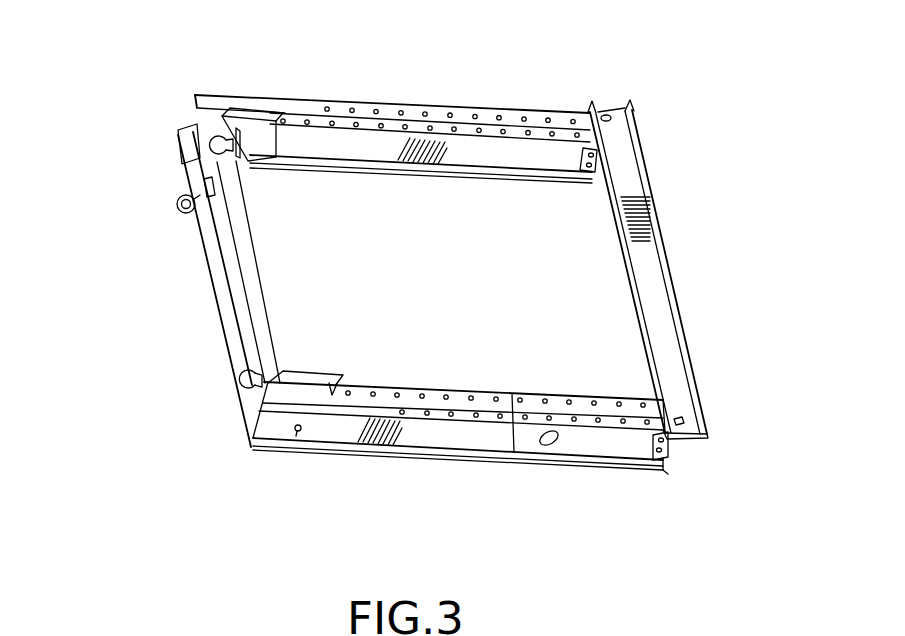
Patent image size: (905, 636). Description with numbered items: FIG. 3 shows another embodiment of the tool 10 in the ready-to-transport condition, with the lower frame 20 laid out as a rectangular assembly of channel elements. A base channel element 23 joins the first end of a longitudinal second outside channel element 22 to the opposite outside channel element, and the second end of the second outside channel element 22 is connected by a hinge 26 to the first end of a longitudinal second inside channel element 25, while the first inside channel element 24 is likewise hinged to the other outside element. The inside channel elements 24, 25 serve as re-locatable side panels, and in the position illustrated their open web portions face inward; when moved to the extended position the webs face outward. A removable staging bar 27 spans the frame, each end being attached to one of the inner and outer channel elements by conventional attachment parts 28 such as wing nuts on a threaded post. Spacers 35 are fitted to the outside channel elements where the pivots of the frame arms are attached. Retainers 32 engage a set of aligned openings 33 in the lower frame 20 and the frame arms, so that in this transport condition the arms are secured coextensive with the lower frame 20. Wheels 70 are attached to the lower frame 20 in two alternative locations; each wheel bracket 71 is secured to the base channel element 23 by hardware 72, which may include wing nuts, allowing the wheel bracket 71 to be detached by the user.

The tool 10 is at (642, 87).
The lower frame 20 is at (470, 438).
The second outside channel element 22 is at (311, 111).
The base channel element 23 is at (223, 277).
The first inside channel element 24 is at (514, 435).
The second inside channel element 25 is at (447, 127).
The hinge 26 is at (667, 448).
The staging bar 27 is at (648, 265).
The attachment parts 28 is at (684, 419).
The retainers 32 is at (552, 444).
The aligned openings 33 is at (299, 432).
The spacers 35 is at (248, 118).
The wheels 70 is at (243, 392).
The wheel bracket 71 is at (180, 140).
The hardware 72 is at (207, 189).